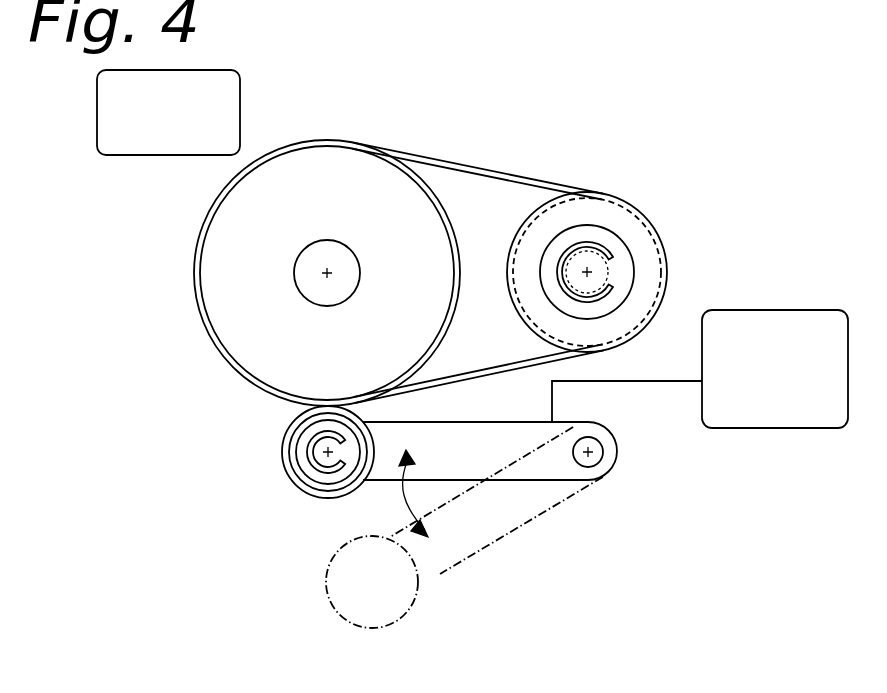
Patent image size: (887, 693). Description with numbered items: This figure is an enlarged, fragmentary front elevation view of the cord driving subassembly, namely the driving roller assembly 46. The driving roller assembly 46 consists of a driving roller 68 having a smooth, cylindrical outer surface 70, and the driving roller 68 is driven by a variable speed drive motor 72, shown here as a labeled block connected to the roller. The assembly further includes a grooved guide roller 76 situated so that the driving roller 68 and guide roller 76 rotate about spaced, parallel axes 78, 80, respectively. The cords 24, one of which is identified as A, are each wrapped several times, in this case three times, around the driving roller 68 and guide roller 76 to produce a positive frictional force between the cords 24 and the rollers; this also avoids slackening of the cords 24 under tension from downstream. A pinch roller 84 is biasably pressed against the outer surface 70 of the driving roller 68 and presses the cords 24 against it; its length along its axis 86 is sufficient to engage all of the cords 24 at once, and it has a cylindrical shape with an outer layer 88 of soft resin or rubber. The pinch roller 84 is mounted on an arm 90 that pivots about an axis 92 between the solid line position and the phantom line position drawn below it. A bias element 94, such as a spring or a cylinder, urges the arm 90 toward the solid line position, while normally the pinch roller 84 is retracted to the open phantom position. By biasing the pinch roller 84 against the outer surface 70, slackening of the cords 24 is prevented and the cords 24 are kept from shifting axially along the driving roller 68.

The cord 24 is at (507, 368).
The driving roller assembly 46 is at (563, 124).
The driving roller 68 is at (318, 186).
The outer surface 70 is at (410, 181).
The variable speed drive motor 72 is at (277, 198).
The grooved guide roller 76 is at (620, 226).
The axis 78 is at (304, 294).
The axis 80 is at (590, 270).
The pinch roller 84 is at (302, 488).
The axis 86 is at (312, 460).
The outer layer 88 is at (336, 498).
The arm 90 is at (458, 464).
The axis 92 is at (590, 452).
The bias element 94 is at (783, 418).
The cord A is at (490, 172).